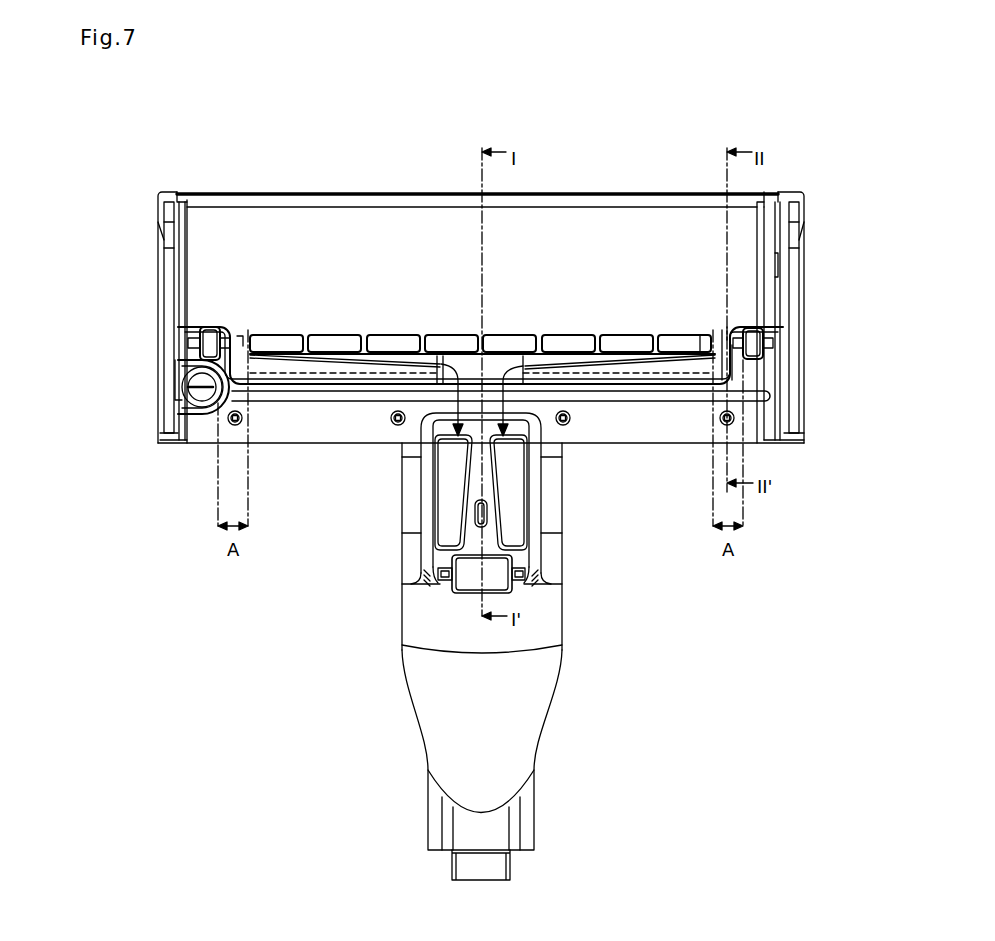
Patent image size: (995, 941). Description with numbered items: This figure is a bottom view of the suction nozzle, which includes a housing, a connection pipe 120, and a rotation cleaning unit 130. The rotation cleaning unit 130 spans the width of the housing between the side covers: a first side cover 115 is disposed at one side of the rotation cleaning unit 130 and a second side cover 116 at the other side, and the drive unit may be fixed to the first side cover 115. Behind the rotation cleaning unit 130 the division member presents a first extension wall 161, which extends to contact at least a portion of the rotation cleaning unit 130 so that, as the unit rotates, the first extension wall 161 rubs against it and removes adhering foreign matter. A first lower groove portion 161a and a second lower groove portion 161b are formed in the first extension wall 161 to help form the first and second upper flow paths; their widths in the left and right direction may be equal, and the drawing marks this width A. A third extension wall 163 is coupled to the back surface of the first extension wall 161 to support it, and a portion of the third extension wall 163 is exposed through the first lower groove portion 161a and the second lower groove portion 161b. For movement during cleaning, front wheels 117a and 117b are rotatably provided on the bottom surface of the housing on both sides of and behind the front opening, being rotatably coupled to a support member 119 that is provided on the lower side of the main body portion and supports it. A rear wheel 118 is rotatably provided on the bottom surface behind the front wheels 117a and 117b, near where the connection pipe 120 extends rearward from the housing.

The first side cover 115 is at (804, 264).
The second side cover 116 is at (157, 264).
The front wheel 117a is at (763, 353).
The front wheel 117b is at (210, 351).
The rear wheel 118 is at (497, 590).
The support member 119 is at (526, 556).
The connection pipe 120 is at (540, 693).
The rotation cleaning unit 130 is at (374, 224).
The first extension wall 161 is at (658, 358).
The first lower groove portion 161a is at (773, 342).
The second lower groove portion 161b is at (194, 341).
The third extension wall 163 is at (731, 378).